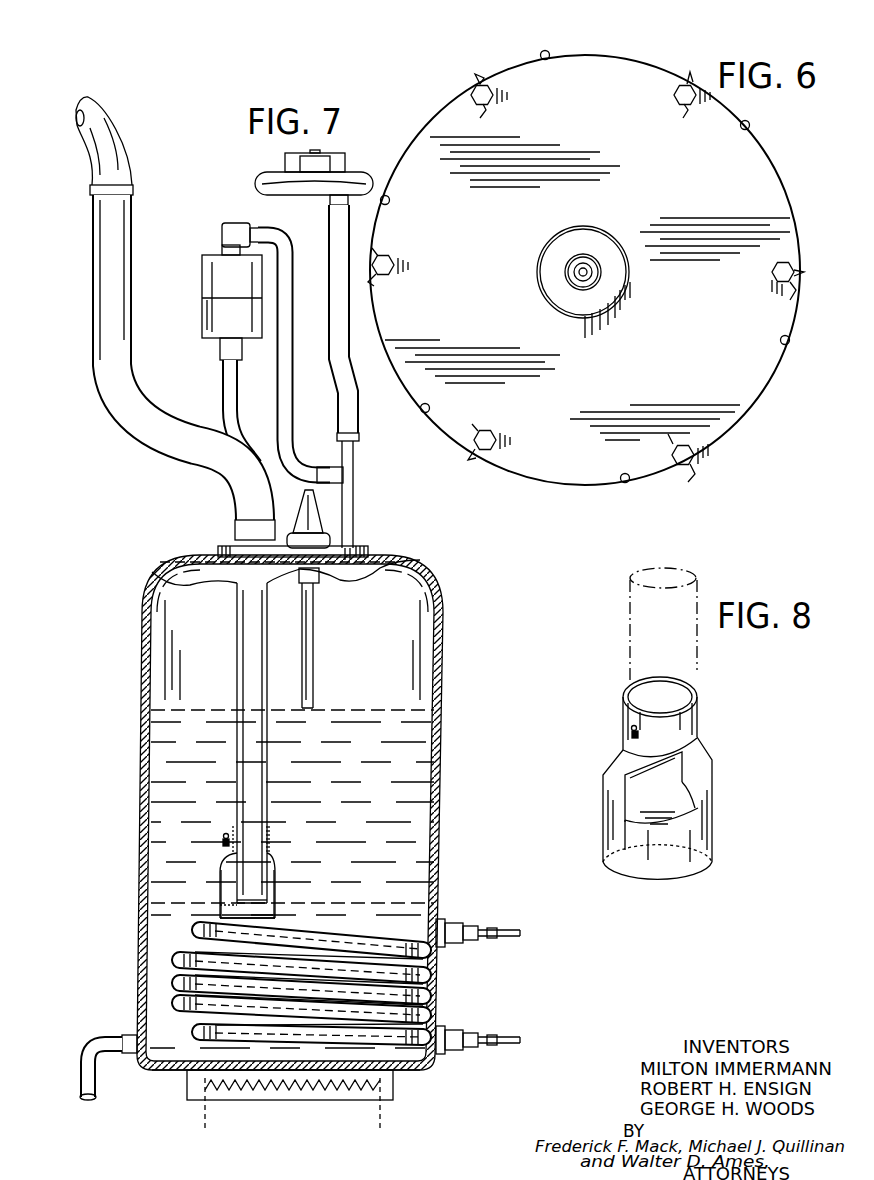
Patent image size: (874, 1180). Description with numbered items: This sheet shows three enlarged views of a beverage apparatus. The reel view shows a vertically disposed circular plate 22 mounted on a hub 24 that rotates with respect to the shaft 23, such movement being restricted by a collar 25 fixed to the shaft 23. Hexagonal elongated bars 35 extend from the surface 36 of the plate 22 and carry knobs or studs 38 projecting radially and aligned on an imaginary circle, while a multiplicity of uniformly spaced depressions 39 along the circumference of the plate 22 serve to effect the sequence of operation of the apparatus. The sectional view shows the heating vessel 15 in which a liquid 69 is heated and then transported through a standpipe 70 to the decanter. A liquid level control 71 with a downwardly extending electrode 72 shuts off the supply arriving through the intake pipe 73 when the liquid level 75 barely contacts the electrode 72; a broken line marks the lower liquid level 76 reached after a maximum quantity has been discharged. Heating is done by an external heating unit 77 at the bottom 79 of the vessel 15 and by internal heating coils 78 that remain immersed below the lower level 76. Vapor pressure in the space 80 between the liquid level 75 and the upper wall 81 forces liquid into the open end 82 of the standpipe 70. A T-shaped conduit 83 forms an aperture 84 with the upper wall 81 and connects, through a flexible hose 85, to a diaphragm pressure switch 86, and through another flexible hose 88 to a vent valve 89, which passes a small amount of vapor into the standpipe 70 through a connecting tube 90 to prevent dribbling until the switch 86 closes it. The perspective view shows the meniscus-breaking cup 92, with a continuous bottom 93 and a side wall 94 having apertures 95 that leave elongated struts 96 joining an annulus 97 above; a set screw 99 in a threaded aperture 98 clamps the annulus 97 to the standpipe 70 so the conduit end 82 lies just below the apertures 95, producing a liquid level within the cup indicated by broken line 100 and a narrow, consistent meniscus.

In FIG. 7, the vessel 15 is at (446, 798).
In FIG. 6, the circular plate 22 is at (560, 486).
In FIG. 6, the shaft 23 is at (578, 269).
In FIG. 6, the hub 24 is at (560, 292).
In FIG. 6, the collar 25 is at (575, 276).
In FIG. 6, the elongated bars 35 is at (480, 106).
In FIG. 6, the surface of plate 36 is at (760, 182).
In FIG. 6, the studs 38 is at (476, 86).
In FIG. 6, the depressions 39 is at (549, 60).
In FIG. 7, the liquid 69 is at (355, 783).
In FIG. 7, the standpipe 70 is at (121, 356).
In FIG. 8, the standpipe 70 is at (630, 640).
In FIG. 7, the liquid level control 71 is at (301, 512).
In FIG. 7, the electrode 72 is at (312, 656).
In FIG. 7, the intake pipe 73 is at (96, 1050).
In FIG. 7, the liquid level 75 is at (352, 712).
In FIG. 7, the lower liquid level 76 is at (382, 903).
In FIG. 7, the external heating unit 77 is at (388, 1090).
In FIG. 7, the internal heating coils 78 is at (188, 966).
In FIG. 7, the bottom of vessel 79 is at (172, 1071).
In FIG. 7, the space 80 is at (400, 610).
In FIG. 7, the upper wall 81 is at (376, 556).
In FIG. 7, the end of standpipe 82 is at (267, 905).
In FIG. 7, the T-shaped conduit 83 is at (350, 505).
In FIG. 7, the aperture 84 is at (356, 548).
In FIG. 7, the flexible hose 85 is at (350, 370).
In FIG. 7, the diaphragm pressure switch 86 is at (272, 180).
In FIG. 7, the flexible hose 88 is at (288, 380).
In FIG. 7, the vent valve 89 is at (222, 282).
In FIG. 7, the connecting tube 90 is at (228, 390).
In FIG. 7, the cup 92 is at (278, 876).
In FIG. 8, the cup 92 is at (715, 784).
In FIG. 7, the bottom of cup 93 is at (221, 918).
In FIG. 8, the bottom of cup 93 is at (676, 826).
In FIG. 7, the side wall 94 is at (276, 910).
In FIG. 8, the side wall 94 is at (695, 850).
In FIG. 7, the apertures 95 is at (221, 884).
In FIG. 8, the apertures 95 is at (656, 764).
In FIG. 8, the struts 96 is at (700, 762).
In FIG. 7, the annulus 97 is at (272, 846).
In FIG. 8, the annulus 97 is at (699, 716).
In FIG. 7, the threaded aperture 98 is at (224, 836).
In FIG. 8, the threaded aperture 98 is at (631, 727).
In FIG. 7, the set screw 99 is at (222, 843).
In FIG. 8, the set screw 99 is at (630, 734).
In FIG. 7, the liquid level within cup 100 is at (221, 905).